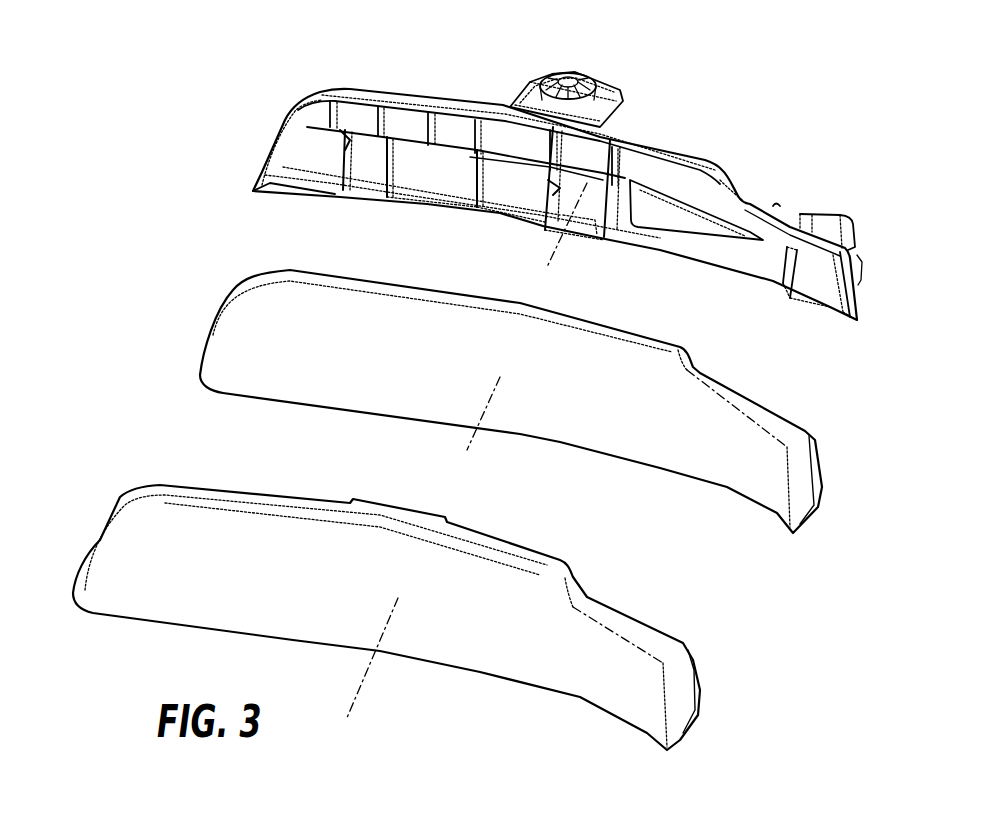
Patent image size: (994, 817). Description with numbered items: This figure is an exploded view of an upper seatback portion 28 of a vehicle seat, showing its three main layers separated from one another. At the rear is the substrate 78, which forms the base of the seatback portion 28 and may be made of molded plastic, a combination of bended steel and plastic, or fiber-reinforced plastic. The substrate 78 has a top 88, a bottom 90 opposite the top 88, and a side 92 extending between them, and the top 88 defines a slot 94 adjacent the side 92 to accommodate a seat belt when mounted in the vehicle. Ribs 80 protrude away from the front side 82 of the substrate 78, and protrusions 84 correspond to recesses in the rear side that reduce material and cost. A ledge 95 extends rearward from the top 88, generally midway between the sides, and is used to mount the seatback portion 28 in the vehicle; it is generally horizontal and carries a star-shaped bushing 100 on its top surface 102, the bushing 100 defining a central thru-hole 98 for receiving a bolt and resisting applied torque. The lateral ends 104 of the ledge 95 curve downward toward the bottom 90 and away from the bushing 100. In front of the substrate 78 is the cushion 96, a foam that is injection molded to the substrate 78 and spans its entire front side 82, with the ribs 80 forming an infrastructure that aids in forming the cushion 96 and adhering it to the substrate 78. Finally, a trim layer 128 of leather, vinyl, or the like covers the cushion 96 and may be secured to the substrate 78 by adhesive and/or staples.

The seatback portion 28 is at (108, 98).
The substrate 78 is at (280, 127).
The ribs 80 is at (547, 143).
The front side 82 is at (520, 187).
The protrusions 84 is at (420, 177).
The top 88 is at (702, 158).
The bottom 90 is at (777, 283).
The side 92 is at (850, 253).
The slot 94 is at (800, 217).
The ledge 95 is at (553, 68).
The cushion 96 is at (227, 300).
The thru-hole 98 is at (577, 70).
The bushing 100 is at (590, 80).
The top surface 102 is at (608, 74).
The lateral ends 104 is at (530, 87).
The trim layer 128 is at (110, 503).